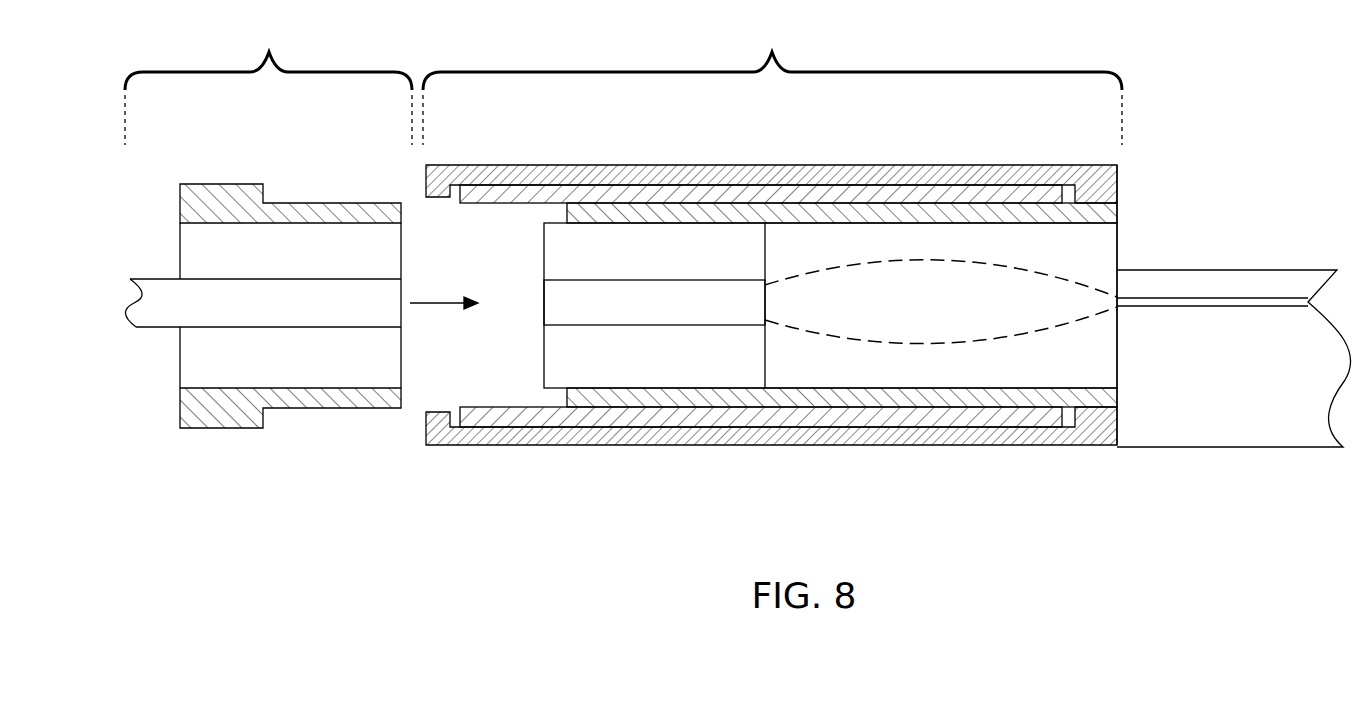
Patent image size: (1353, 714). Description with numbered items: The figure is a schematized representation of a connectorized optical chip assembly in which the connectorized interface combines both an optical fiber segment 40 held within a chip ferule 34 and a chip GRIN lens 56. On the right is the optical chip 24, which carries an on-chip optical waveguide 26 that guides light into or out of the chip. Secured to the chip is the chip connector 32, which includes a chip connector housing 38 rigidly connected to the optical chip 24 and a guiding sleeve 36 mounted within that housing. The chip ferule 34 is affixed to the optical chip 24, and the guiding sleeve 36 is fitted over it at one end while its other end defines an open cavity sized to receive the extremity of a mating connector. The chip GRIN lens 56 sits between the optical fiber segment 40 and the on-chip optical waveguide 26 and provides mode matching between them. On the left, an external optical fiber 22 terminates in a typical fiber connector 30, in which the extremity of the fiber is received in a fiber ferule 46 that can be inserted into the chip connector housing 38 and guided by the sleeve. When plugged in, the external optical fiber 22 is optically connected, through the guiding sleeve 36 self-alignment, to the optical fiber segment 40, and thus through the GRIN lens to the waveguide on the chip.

The external optical fiber 22 is at (148, 305).
The optical chip 24 is at (1251, 427).
The on-chip optical waveguide 26 is at (1182, 302).
The fiber connector 30 is at (268, 84).
The chip connector 32 is at (772, 84).
The chip ferule 34 is at (562, 254).
The guiding sleeve 36 is at (595, 413).
The chip connector housing 38 is at (842, 435).
The optical fiber segment 40 is at (562, 305).
The fiber ferule 46 is at (342, 353).
The chip GRIN lens 56 is at (1028, 368).